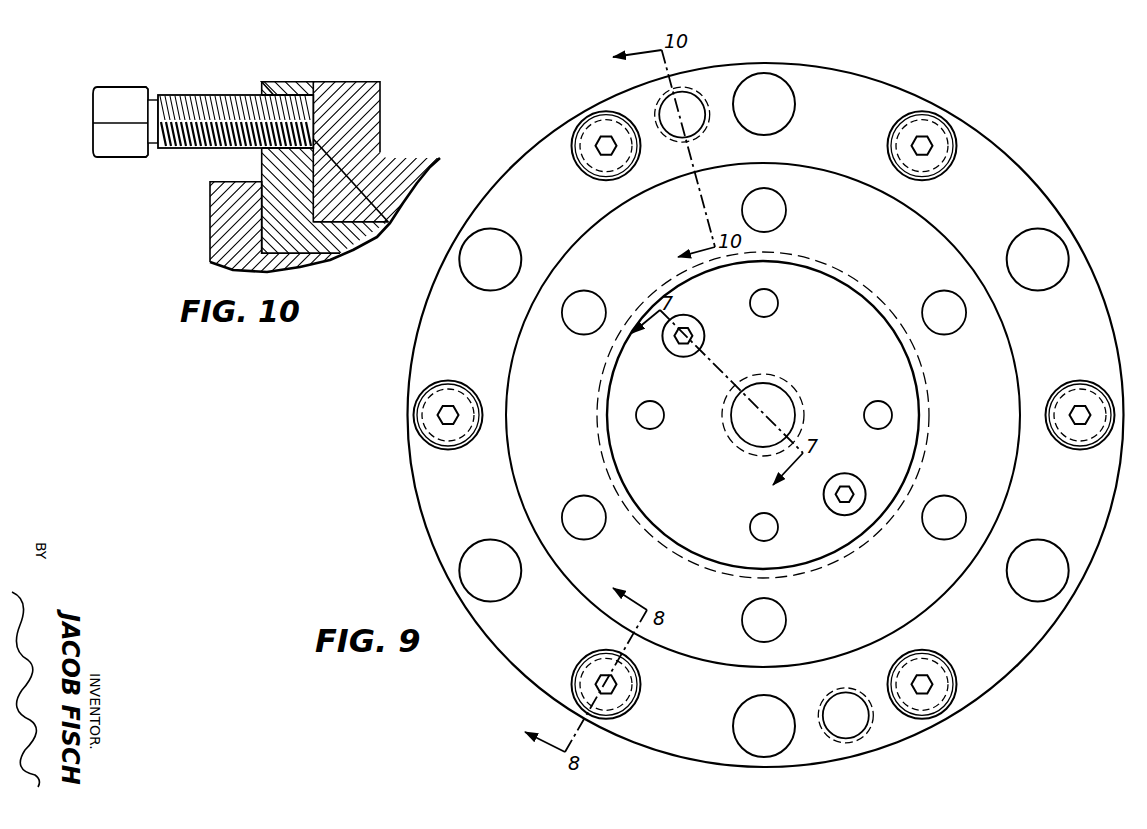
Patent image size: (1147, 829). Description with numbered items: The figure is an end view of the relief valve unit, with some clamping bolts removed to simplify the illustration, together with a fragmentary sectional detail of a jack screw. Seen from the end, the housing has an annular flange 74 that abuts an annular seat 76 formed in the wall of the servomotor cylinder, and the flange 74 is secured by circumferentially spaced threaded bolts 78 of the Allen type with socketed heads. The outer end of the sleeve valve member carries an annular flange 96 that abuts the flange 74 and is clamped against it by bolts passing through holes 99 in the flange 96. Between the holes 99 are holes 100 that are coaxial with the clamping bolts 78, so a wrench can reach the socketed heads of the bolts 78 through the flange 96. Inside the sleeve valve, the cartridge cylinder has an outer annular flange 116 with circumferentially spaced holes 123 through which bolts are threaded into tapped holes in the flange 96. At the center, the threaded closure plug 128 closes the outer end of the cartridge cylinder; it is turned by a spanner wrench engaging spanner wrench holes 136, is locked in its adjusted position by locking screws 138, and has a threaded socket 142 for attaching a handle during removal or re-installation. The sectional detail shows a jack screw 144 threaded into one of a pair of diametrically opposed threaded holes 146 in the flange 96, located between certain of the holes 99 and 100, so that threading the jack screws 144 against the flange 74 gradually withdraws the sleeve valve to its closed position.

In FIG. 10, the flange 74 is at (350, 82).
In FIG. 9, the annular seat 76 is at (857, 75).
In FIG. 9, the threaded bolts 78 is at (582, 140).
In FIG. 10, the annular flange 96 is at (277, 82).
In FIG. 9, the holes 99 is at (772, 75).
In FIG. 9, the holes 100 is at (630, 120).
In FIG. 10, the outer annular flange 116 is at (210, 200).
In FIG. 9, the outer annular flange 116 is at (918, 212).
In FIG. 9, the holes 123 is at (785, 205).
In FIG. 9, the threaded closure plug 128 is at (597, 393).
In FIG. 9, the spanner wrench holes 136 is at (773, 292).
In FIG. 9, the locking screws 138 is at (682, 315).
In FIG. 9, the threaded socket 142 is at (748, 443).
In FIG. 10, the jack screws 144 is at (177, 95).
In FIG. 10, the threaded holes 146 is at (278, 150).
In FIG. 9, the threaded holes 146 is at (688, 92).